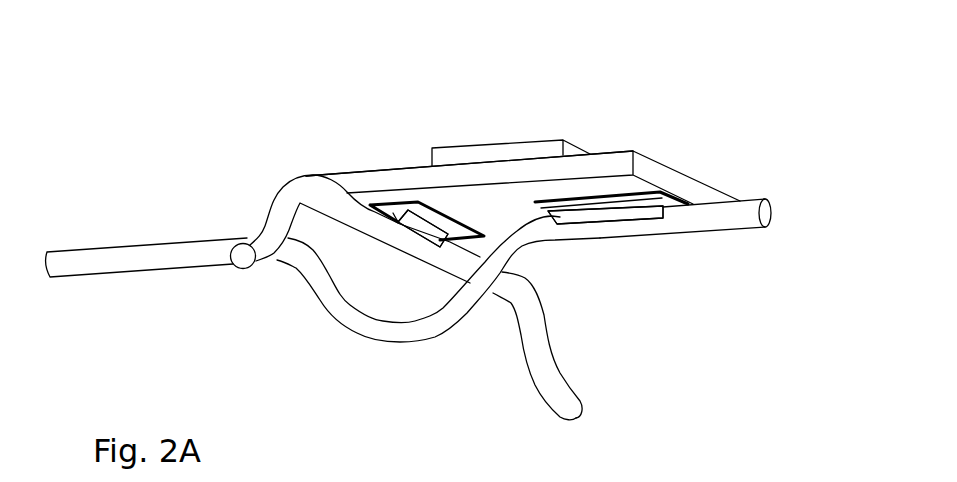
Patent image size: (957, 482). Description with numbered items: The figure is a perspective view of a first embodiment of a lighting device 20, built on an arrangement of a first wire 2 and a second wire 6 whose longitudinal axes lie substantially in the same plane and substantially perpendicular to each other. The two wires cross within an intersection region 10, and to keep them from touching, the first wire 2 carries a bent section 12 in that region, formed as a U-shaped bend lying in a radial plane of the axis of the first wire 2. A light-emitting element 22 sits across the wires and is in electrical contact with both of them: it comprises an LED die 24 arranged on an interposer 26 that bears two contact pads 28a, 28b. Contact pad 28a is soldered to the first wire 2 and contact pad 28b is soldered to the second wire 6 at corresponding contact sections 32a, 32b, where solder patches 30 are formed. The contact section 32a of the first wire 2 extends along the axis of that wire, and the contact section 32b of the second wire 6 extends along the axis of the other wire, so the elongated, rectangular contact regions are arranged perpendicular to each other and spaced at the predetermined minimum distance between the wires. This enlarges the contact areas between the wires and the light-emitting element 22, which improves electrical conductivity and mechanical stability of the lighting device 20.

The first wire 2 is at (718, 218).
The second wire 6 is at (550, 380).
The intersection region 10 is at (372, 262).
The bent section 12 is at (343, 342).
The lighting device 20 is at (733, 78).
The light-emitting element 22 is at (400, 112).
The LED die 24 is at (525, 150).
The interposer 26 is at (612, 163).
The contact pad 28a is at (582, 203).
The contact pad 28b is at (435, 217).
The solder patch 30 is at (432, 230).
The contact section 32a is at (617, 237).
The contact section 32b is at (405, 247).